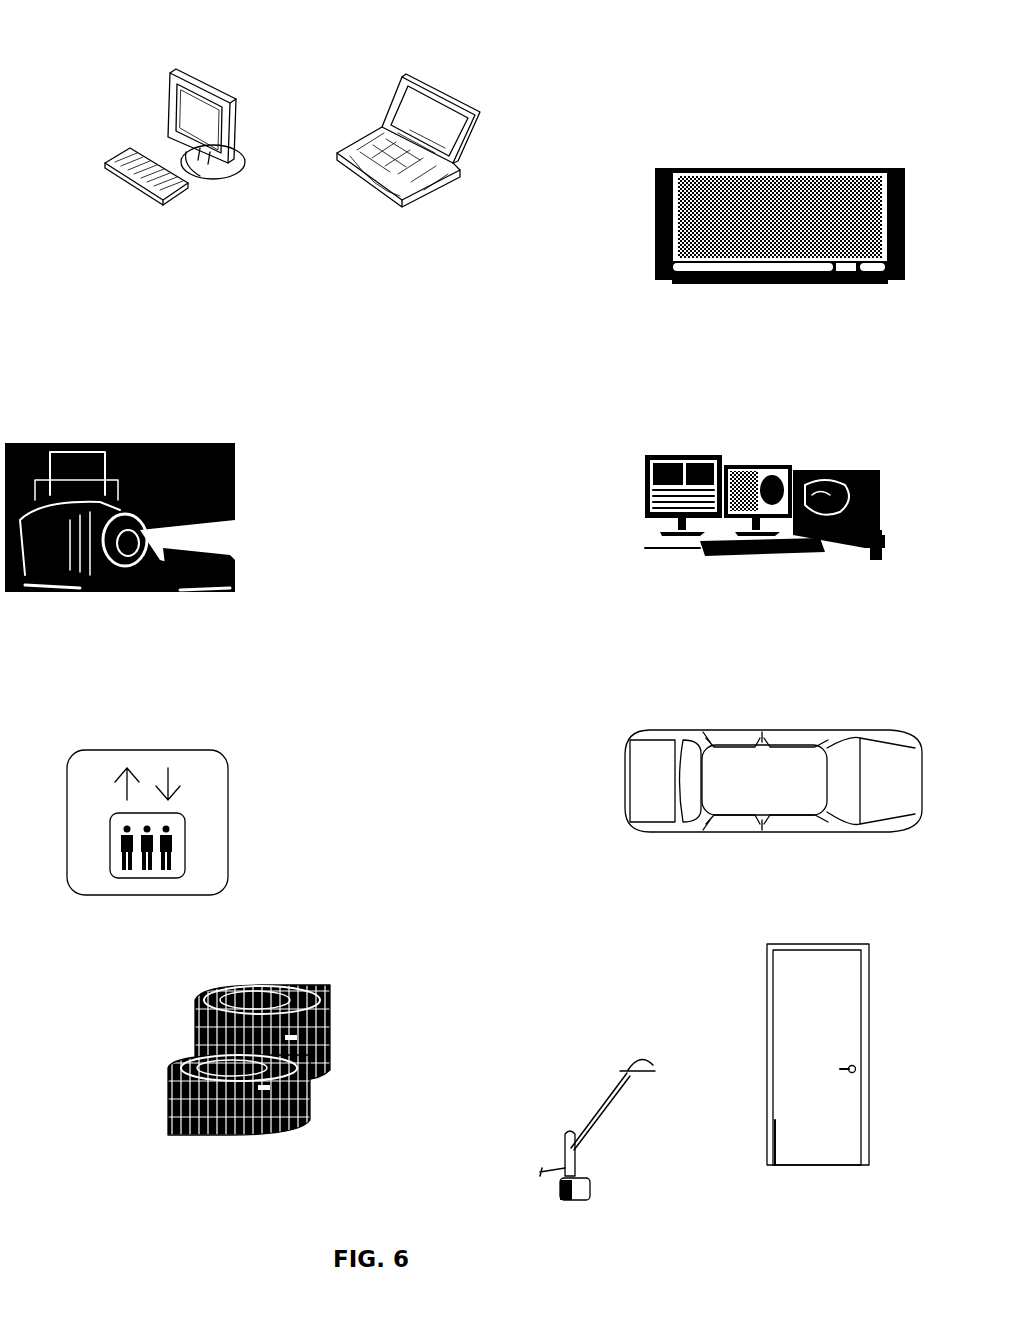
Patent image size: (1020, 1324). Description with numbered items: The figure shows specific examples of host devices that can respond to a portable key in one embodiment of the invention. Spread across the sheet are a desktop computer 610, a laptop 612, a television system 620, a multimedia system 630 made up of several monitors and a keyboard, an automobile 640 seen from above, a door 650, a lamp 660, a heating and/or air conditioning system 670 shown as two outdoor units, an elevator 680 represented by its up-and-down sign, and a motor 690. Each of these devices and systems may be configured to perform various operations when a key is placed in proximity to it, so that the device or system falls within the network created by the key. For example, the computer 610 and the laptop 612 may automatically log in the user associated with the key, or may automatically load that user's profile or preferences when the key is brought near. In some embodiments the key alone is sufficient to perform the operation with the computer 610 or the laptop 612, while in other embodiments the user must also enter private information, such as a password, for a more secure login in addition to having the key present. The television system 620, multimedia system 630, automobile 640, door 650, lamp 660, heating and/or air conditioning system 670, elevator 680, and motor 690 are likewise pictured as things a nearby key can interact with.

The computer 610 is at (193, 77).
The laptop 612 is at (425, 82).
The television system 620 is at (787, 168).
The multimedia system 630 is at (725, 465).
The automobile 640 is at (755, 730).
The door 650 is at (767, 1015).
The lamp 660 is at (637, 1060).
The heating and/or air conditioning system 670 is at (160, 1073).
The elevator 680 is at (229, 798).
The motor 690 is at (90, 443).